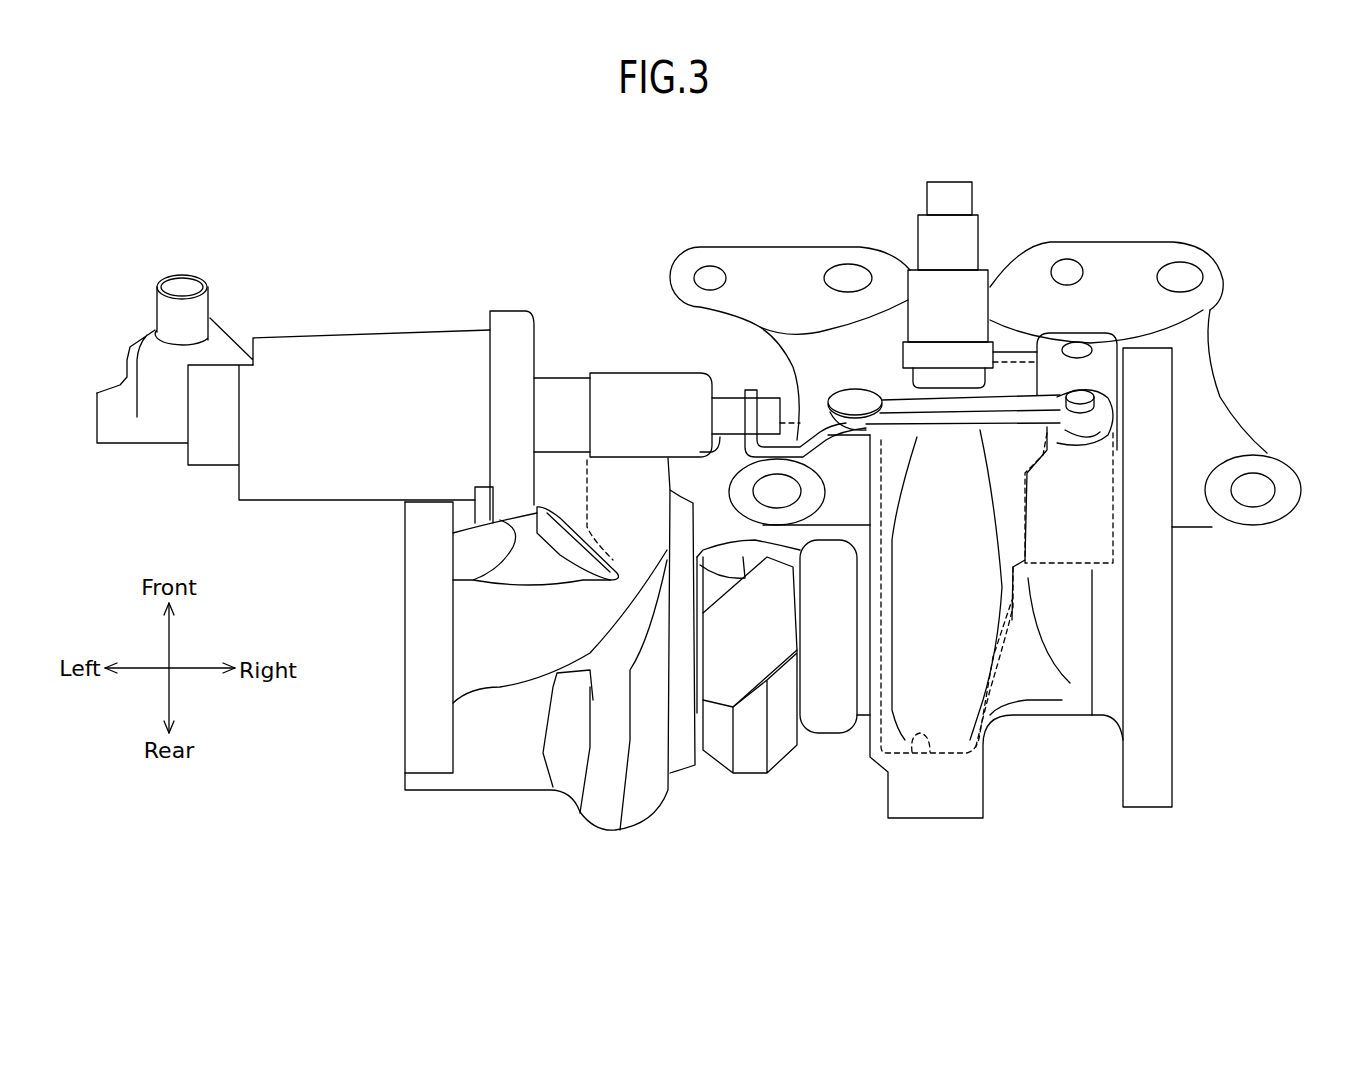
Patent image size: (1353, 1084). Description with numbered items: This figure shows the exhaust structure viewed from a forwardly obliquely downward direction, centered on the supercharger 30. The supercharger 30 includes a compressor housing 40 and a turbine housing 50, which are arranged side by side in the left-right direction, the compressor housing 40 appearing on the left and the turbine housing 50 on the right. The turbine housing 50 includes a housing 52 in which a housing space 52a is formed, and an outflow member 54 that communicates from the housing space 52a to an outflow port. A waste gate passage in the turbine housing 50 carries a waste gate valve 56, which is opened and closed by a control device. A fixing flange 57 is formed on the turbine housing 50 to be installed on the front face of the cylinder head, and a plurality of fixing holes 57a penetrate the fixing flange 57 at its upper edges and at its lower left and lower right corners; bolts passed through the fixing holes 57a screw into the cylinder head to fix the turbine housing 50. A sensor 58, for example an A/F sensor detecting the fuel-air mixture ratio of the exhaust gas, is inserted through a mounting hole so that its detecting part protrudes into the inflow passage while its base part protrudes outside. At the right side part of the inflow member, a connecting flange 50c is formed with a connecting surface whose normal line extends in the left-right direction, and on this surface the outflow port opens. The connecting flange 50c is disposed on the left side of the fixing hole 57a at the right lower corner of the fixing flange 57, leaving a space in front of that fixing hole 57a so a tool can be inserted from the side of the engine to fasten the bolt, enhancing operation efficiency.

The supercharger 30 is at (752, 860).
The compressor housing 40 is at (603, 847).
The turbine housing 50 is at (998, 634).
The connecting flange 50c is at (1145, 797).
The housing 52 is at (933, 650).
The housing space 52a is at (925, 755).
The outflow member 54 is at (1061, 731).
The waste gate valve 56 is at (1097, 540).
The fixing flange 57 is at (1198, 400).
The fixing holes 57a is at (707, 278).
The sensor 58 is at (927, 237).